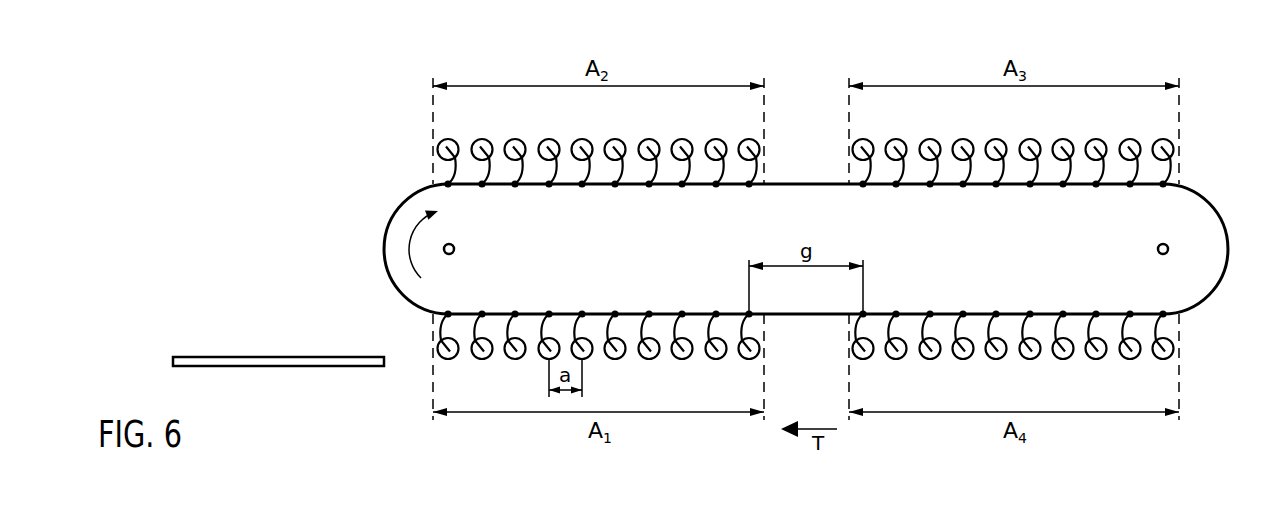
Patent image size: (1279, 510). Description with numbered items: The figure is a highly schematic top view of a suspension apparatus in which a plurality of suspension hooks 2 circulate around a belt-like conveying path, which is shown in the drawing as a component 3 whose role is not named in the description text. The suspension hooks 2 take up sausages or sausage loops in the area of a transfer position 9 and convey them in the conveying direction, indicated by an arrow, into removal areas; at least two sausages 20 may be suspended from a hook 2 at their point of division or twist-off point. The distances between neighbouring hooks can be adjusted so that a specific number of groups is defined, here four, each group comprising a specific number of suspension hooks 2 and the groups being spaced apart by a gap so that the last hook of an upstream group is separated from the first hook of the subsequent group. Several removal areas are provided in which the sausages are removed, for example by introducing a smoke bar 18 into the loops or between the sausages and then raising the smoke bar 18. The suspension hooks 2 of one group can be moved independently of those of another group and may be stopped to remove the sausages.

The suspension hooks 2 is at (442, 318).
The drive roller 3 is at (385, 237).
The transfer position 9 is at (1227, 257).
The smoke bar 18 is at (208, 357).
The sausages 20 is at (437, 352).